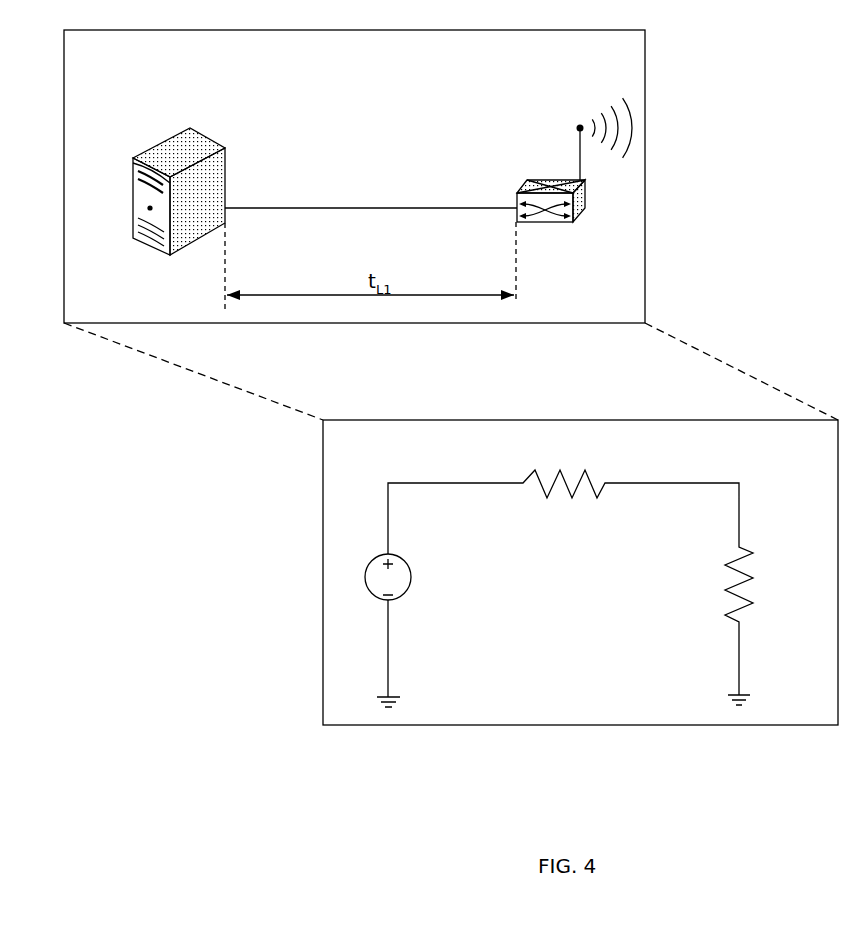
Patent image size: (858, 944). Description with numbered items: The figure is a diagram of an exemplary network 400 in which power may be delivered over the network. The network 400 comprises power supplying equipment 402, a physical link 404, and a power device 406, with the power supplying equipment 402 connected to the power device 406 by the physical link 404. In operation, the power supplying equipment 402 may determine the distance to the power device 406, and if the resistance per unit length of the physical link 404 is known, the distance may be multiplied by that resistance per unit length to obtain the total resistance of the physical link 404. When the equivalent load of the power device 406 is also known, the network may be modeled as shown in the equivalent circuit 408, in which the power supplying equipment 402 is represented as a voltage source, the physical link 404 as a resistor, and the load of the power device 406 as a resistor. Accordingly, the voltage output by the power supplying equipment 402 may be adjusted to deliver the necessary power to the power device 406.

The network 400 is at (160, 78).
The power supplying equipment (PSE) 402 is at (188, 128).
The physical link 404 is at (332, 207).
The power device (PD) 406 is at (545, 180).
The equivalent circuit 408 is at (402, 418).